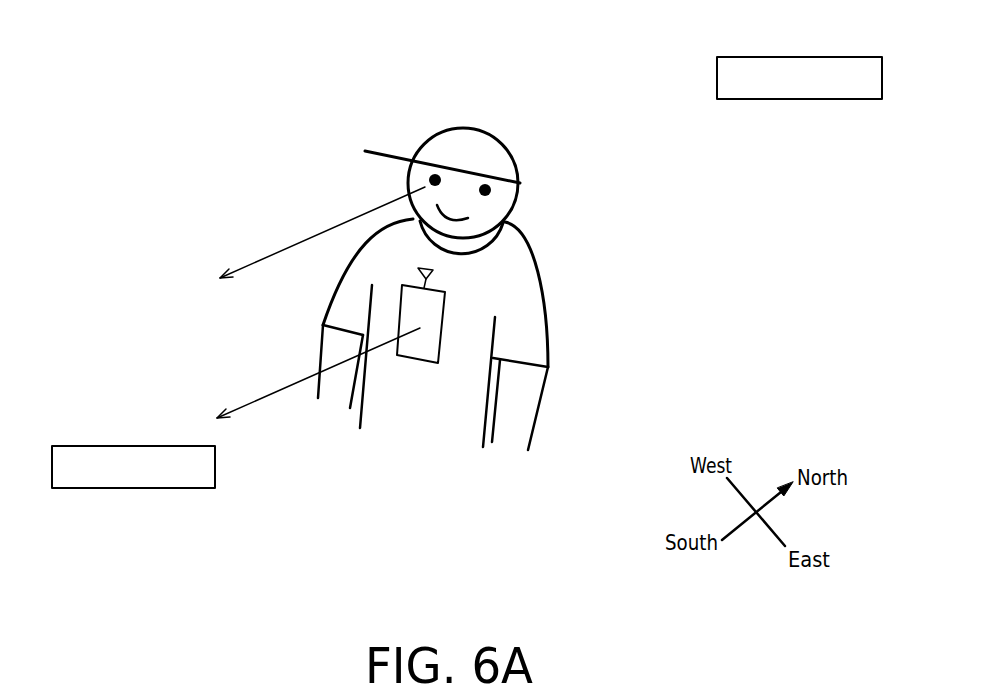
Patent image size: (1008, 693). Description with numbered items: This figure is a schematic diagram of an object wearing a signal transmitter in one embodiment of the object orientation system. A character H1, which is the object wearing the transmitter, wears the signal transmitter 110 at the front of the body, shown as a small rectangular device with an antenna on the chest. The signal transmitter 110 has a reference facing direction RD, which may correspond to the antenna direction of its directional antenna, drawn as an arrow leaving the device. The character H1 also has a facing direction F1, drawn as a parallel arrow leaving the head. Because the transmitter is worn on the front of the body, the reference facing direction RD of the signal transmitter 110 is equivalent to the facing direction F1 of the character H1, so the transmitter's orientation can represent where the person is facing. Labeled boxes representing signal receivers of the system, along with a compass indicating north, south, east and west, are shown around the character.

The character H1 is at (465, 128).
The facing direction F1 is at (323, 231).
The signal transmitter 110 is at (442, 327).
The reference facing direction RD is at (309, 380).